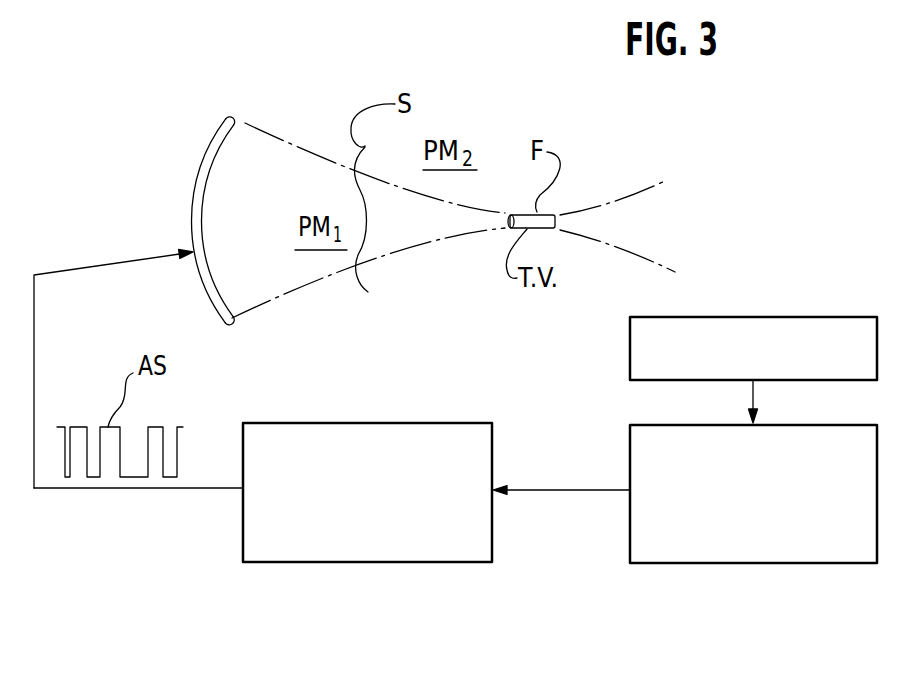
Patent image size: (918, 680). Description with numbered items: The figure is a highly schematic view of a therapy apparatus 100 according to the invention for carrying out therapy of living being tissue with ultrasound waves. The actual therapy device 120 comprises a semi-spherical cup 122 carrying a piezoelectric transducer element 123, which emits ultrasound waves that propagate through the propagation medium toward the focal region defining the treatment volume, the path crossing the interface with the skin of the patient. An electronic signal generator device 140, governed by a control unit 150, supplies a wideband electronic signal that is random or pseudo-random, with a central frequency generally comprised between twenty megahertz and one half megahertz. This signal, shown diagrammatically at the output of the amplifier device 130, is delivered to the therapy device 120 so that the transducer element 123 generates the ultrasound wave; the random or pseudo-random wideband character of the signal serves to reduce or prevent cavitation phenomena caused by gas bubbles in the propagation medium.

The apparatus 100 is at (506, 582).
The therapy device 120 is at (220, 200).
The semi-spherical cup 122 is at (217, 130).
The piezoelectric transducer element 123 is at (218, 157).
The amplifier device 130 is at (380, 507).
The signal generator device 140 is at (772, 505).
The control unit 150 is at (770, 377).